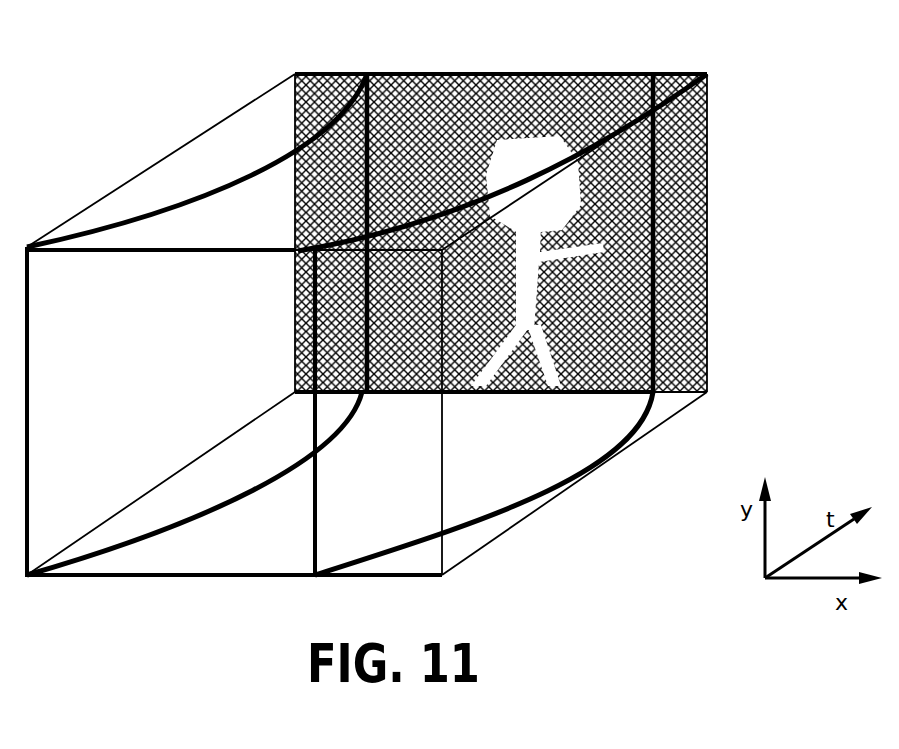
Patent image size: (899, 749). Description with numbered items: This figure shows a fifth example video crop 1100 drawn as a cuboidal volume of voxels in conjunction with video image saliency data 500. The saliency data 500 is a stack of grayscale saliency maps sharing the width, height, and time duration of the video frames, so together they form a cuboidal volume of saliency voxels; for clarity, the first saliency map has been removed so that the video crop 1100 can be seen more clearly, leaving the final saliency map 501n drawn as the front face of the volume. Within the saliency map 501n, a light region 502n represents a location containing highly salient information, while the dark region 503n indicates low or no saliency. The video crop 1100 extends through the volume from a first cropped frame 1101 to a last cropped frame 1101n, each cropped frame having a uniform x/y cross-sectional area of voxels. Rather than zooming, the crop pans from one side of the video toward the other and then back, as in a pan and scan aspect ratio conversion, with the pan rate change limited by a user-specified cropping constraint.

The video image saliency data 500 is at (230, 115).
The saliency map 501n is at (708, 230).
The region 502n is at (514, 151).
The region 503n is at (683, 387).
The video crop 1100 is at (210, 197).
The cropped frame 1101 is at (342, 567).
The cropped frame 1101n is at (655, 272).